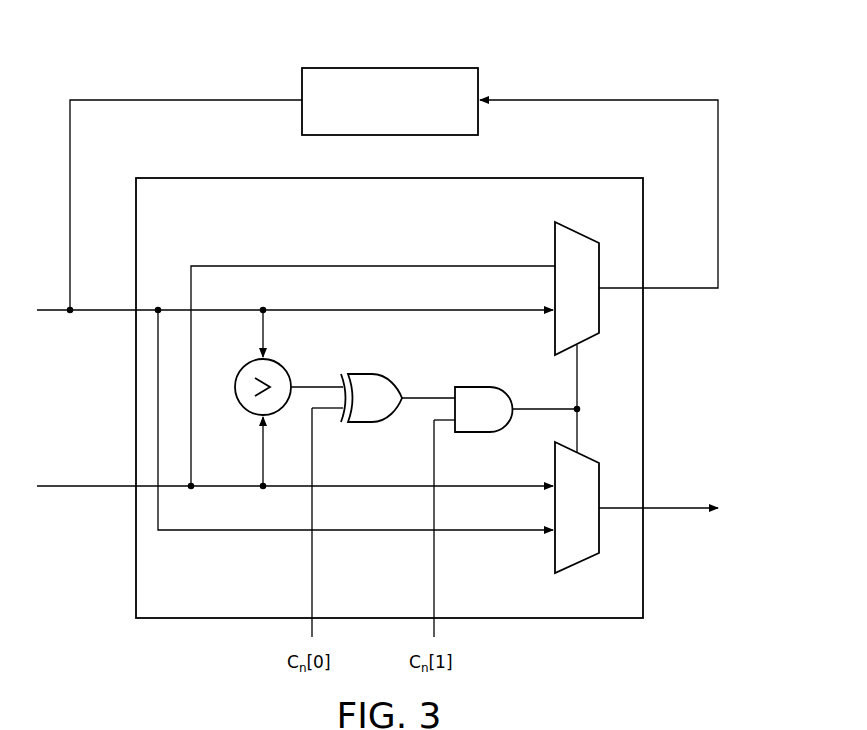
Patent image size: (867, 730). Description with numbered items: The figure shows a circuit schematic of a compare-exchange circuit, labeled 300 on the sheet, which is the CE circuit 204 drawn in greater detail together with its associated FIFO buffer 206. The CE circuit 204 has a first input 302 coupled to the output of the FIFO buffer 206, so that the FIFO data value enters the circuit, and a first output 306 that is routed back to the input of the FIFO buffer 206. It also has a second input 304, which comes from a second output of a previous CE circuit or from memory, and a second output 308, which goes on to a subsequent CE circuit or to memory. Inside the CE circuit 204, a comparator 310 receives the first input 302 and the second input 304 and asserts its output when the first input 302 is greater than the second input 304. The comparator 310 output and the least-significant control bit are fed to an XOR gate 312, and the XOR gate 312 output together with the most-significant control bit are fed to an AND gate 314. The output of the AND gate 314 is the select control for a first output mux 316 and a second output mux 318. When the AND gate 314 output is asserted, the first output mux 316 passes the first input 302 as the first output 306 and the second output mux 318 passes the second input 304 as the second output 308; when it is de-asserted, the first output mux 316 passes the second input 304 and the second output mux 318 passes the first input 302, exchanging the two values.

The CE circuit 204 is at (224, 177).
The FIFO buffer 206 is at (390, 67).
The circuit 300 is at (100, 726).
The first input 302 is at (113, 308).
The second input 304 is at (113, 490).
The first output 306 is at (609, 99).
The second output 308 is at (675, 511).
The comparator 310 is at (243, 363).
The XOR gate 312 is at (368, 373).
The AND gate 314 is at (474, 387).
The first output mux 316 is at (581, 233).
The second output mux 318 is at (582, 564).